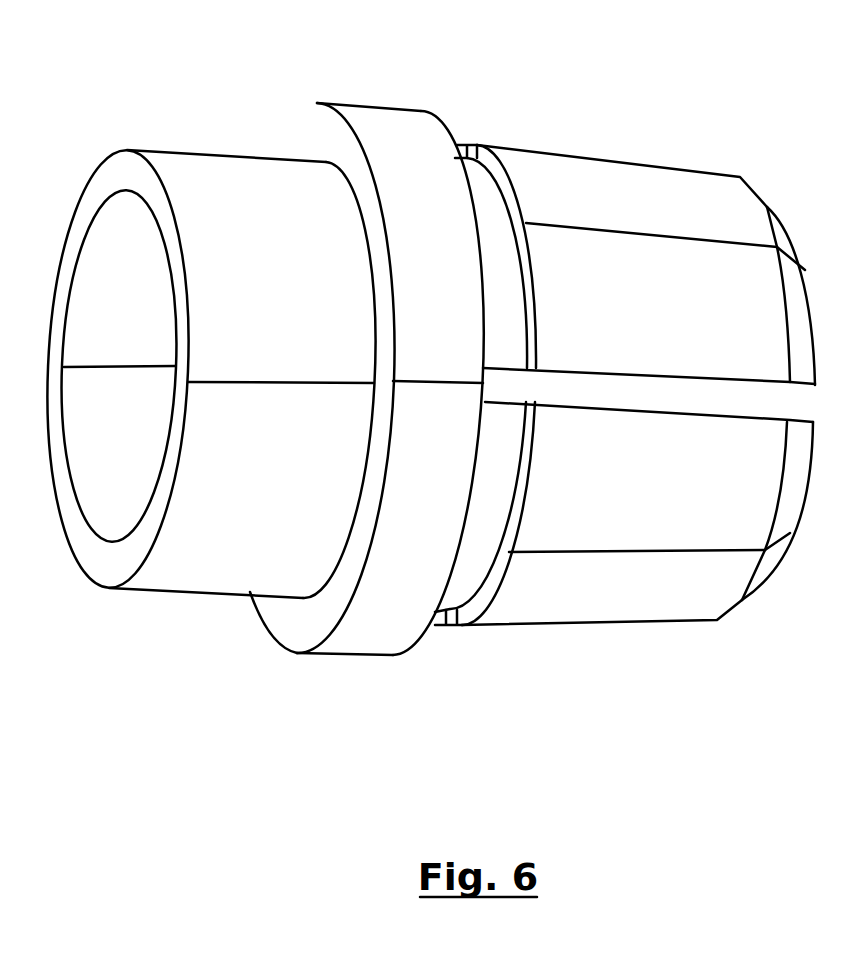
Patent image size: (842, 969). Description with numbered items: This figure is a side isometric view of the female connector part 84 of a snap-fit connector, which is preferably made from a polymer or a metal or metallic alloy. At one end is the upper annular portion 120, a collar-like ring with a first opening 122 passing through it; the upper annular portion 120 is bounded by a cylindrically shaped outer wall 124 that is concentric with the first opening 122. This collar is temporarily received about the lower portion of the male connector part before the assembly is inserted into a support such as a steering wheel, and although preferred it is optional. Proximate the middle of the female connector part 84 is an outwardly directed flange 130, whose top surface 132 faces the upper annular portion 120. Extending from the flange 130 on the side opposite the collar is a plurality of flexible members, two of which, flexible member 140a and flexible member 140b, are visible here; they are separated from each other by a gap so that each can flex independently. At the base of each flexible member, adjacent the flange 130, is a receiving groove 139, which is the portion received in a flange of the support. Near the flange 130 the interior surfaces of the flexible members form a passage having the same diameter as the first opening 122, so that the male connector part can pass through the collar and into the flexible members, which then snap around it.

The female connector part 84 is at (474, 49).
The upper annular portion 120 is at (173, 162).
The first opening 122 is at (99, 276).
The cylindrically shaped outer wall 124 is at (190, 547).
The outwardly directed flange 130 is at (387, 118).
The top surface 132 is at (310, 137).
The receiving groove 139 is at (463, 575).
The flexible member 140a is at (628, 482).
The flexible member 140b is at (652, 197).